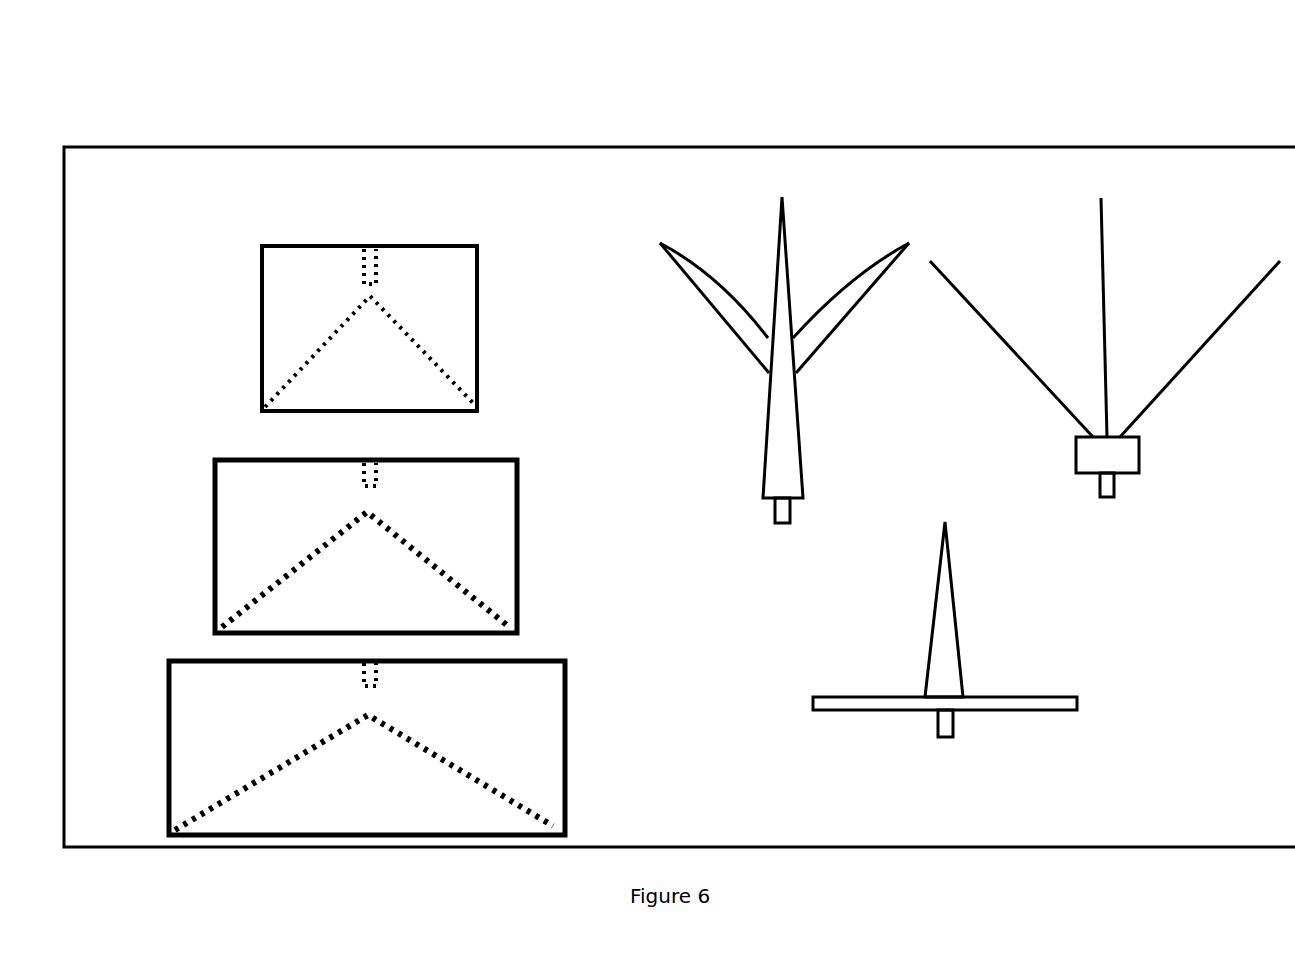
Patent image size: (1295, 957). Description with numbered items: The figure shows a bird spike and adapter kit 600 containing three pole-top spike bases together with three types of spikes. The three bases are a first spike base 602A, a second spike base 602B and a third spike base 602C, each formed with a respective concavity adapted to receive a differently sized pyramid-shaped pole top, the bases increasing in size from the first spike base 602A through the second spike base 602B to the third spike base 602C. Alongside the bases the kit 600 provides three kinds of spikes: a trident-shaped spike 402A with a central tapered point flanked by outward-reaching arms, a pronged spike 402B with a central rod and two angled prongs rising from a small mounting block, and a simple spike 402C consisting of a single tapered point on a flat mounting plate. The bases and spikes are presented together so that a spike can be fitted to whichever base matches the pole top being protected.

The antenna configuration diagram 600 is at (1188, 48).
The first spike base 602A is at (270, 272).
The second spike base 602B is at (232, 497).
The third spike base 602C is at (193, 722).
The trident-shaped spike 402A is at (768, 472).
The pronged spike 402B is at (1083, 458).
The spike 402C is at (927, 672).